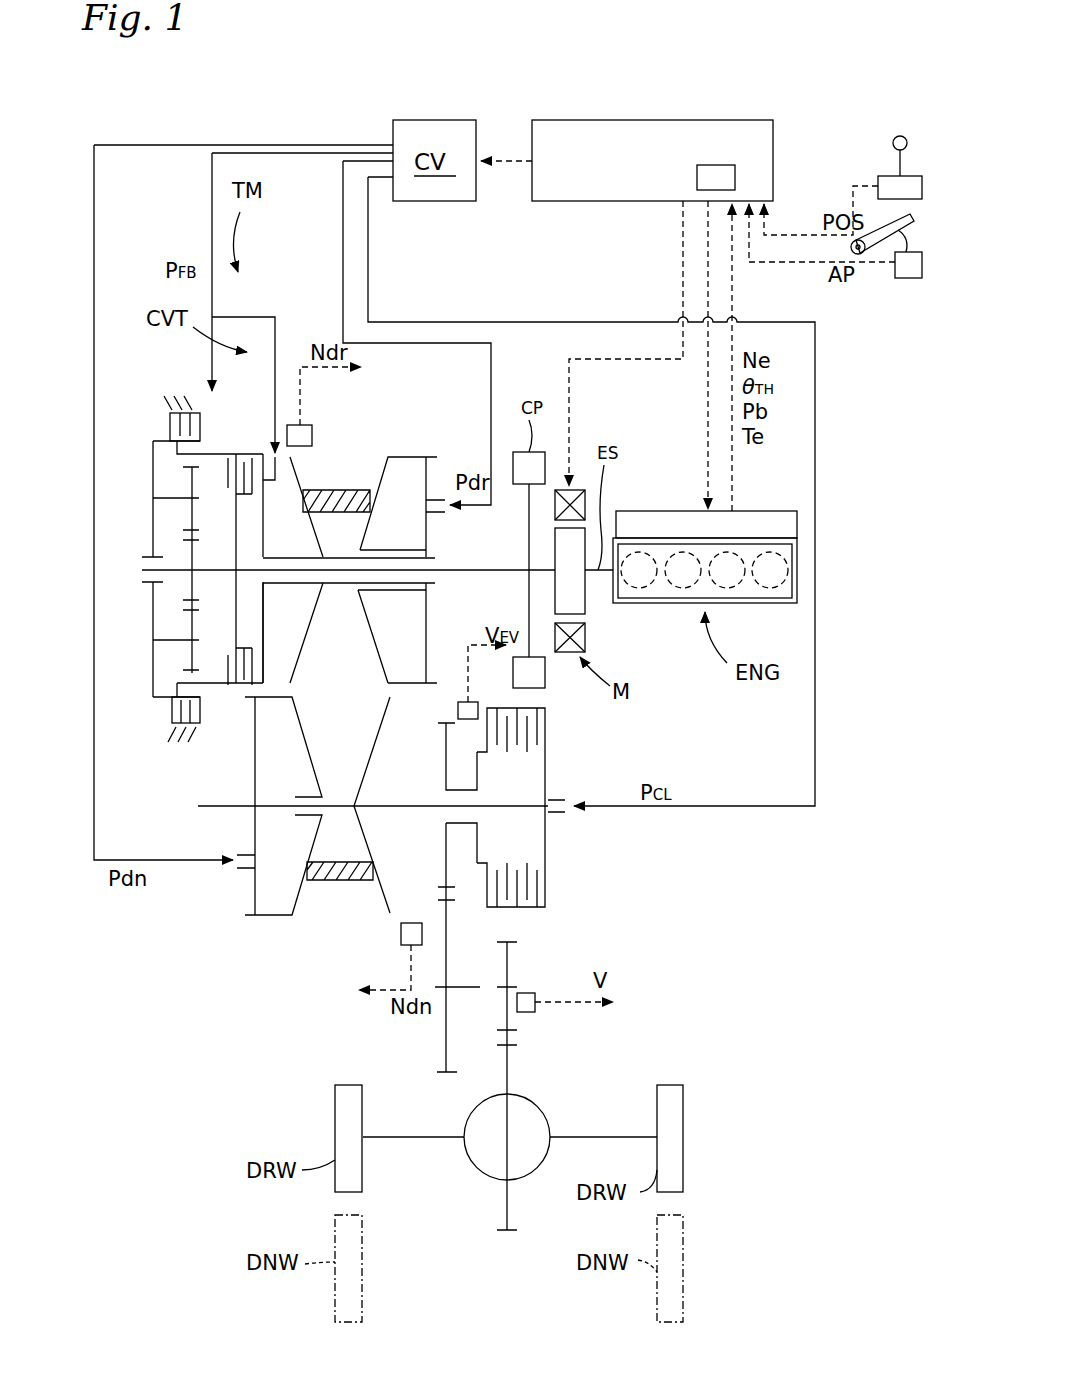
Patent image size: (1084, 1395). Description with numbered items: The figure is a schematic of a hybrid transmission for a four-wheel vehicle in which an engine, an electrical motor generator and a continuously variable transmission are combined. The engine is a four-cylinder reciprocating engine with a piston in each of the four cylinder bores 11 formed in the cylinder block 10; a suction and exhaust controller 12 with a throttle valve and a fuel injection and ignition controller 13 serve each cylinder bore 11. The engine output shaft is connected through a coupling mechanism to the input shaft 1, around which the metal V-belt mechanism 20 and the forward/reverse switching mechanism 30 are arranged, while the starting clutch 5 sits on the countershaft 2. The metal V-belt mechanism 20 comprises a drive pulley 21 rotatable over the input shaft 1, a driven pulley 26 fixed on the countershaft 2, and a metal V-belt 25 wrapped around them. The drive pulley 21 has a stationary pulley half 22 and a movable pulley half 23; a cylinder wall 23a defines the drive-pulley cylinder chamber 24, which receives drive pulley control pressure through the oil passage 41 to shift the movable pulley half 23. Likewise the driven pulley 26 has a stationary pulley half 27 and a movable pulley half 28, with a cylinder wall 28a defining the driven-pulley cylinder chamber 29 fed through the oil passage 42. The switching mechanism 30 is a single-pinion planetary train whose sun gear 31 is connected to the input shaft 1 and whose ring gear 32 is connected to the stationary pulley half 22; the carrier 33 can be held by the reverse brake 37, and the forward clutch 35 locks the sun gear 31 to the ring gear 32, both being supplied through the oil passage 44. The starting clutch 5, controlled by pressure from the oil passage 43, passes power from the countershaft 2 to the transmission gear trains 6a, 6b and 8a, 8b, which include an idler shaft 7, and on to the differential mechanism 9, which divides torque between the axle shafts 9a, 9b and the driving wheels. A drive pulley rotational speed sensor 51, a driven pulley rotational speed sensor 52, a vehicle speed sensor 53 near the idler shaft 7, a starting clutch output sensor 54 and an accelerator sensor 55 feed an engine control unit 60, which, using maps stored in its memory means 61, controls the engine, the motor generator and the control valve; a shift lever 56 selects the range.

The input shaft 1 is at (488, 571).
The countershaft 2 is at (412, 808).
The starting clutch 5 is at (560, 885).
The transmission gear train 6a is at (446, 760).
The transmission gear train 6b is at (447, 1072).
The idler shaft 7 is at (466, 985).
The transmission gear train 8a is at (510, 966).
The transmission gear train 8b is at (510, 1070).
The differential mechanism 9 is at (473, 1167).
The axle shaft 9a is at (448, 1135).
The axle shaft 9b is at (556, 1135).
The cylinder block 10 is at (673, 604).
The cylinder bore 11 is at (638, 590).
The suction and exhaust controller 12 is at (752, 545).
The fuel injection and ignition controller 13 is at (622, 511).
The metal V-belt mechanism 20 is at (428, 655).
The drive pulley 21 is at (408, 452).
The stationary pulley half 22 is at (298, 473).
The movable pulley half 23 is at (376, 478).
The cylinder wall 23a is at (428, 538).
The drive-pulley cylinder chamber 24 is at (410, 518).
The metal V-belt 25 is at (373, 687).
The driven pulley 26 is at (305, 918).
The stationary pulley half 27 is at (390, 910).
The movable pulley half 28 is at (298, 897).
The cylinder wall 28a is at (255, 772).
The driven-pulley cylinder chamber 29 is at (294, 788).
The forward/reverse switching mechanism 30 is at (149, 392).
The sun gear 31 is at (192, 560).
The ring gear 32 is at (180, 683).
The carrier 33 is at (153, 473).
The forward clutch 35 is at (248, 456).
The reverse brake 37 is at (170, 425).
The oil passage 41 is at (343, 222).
The oil passage 42 is at (312, 145).
The oil passage 43 is at (816, 392).
The oil passage 44 is at (212, 162).
The drive pulley rotational speed sensor 51 is at (310, 425).
The driven pulley rotational speed sensor 52 is at (411, 923).
The vehicle speed sensor 53 is at (527, 1012).
The starting clutch output sensor 54 is at (478, 708).
The accelerator sensor 55 is at (908, 280).
The shift lever 56 is at (880, 176).
The engine control unit 60 is at (648, 173).
The memory means 61 is at (726, 176).